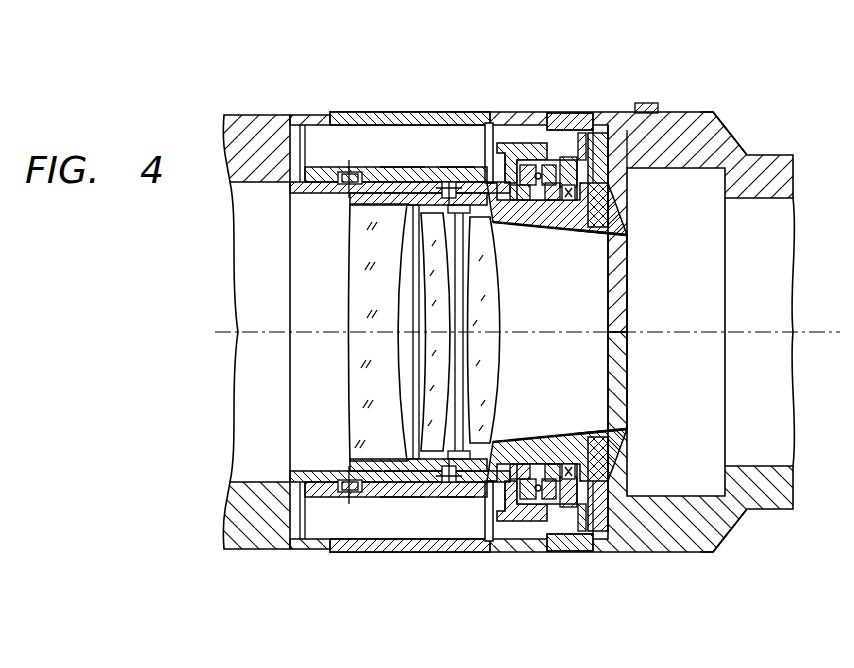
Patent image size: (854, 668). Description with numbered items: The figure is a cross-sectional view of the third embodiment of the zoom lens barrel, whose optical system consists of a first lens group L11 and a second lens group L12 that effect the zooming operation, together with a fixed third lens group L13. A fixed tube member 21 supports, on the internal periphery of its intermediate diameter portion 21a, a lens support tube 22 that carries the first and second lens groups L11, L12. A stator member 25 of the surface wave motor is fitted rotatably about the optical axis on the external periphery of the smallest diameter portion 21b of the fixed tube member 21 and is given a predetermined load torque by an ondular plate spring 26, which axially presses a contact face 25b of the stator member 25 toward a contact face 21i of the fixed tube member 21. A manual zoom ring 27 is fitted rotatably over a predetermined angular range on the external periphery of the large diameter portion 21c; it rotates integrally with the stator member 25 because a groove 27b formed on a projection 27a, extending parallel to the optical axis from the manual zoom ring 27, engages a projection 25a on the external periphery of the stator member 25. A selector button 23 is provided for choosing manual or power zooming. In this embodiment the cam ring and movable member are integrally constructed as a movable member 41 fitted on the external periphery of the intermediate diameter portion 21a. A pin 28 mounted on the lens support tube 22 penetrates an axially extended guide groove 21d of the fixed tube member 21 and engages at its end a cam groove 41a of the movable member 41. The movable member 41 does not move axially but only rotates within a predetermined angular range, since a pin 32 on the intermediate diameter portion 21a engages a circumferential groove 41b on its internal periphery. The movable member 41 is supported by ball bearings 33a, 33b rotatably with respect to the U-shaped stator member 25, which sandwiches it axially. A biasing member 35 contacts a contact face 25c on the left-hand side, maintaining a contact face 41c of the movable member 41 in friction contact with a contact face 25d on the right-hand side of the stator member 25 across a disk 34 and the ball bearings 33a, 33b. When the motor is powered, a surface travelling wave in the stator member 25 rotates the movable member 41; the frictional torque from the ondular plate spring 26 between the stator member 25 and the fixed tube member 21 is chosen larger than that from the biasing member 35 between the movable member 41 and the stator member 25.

The fixed tube member 21 is at (258, 114).
The intermediate diameter portion 21a is at (311, 176).
The smallest diameter portion 21b is at (594, 240).
The large diameter portion 21c is at (625, 135).
The guide groove 21d is at (400, 496).
The contact face 21i is at (735, 148).
The lens support tube 22 is at (373, 496).
The selector button 23 is at (660, 108).
The stator member 25 is at (547, 212).
The projection 25a is at (718, 116).
The contact face 25b is at (618, 186).
The contact face 25c is at (510, 150).
The contact face 25d is at (612, 207).
The ondular plate spring 26 is at (566, 215).
The manual zoom ring 27 is at (527, 160).
The projection 27a is at (597, 145).
The groove 27b is at (600, 120).
The pin 28 is at (441, 496).
The pin 32 is at (352, 172).
The ball bearing 33a is at (533, 205).
The ball bearing 33b is at (578, 218).
The disk 34 is at (590, 150).
The biasing member 35 is at (545, 160).
The movable member 41 is at (496, 133).
The cam groove 41a is at (455, 499).
The circumferential groove 41b is at (357, 178).
The contact face 41c is at (606, 233).
The first lens group L11 is at (362, 273).
The second lens group L12 is at (433, 243).
The third lens group L13 is at (490, 377).